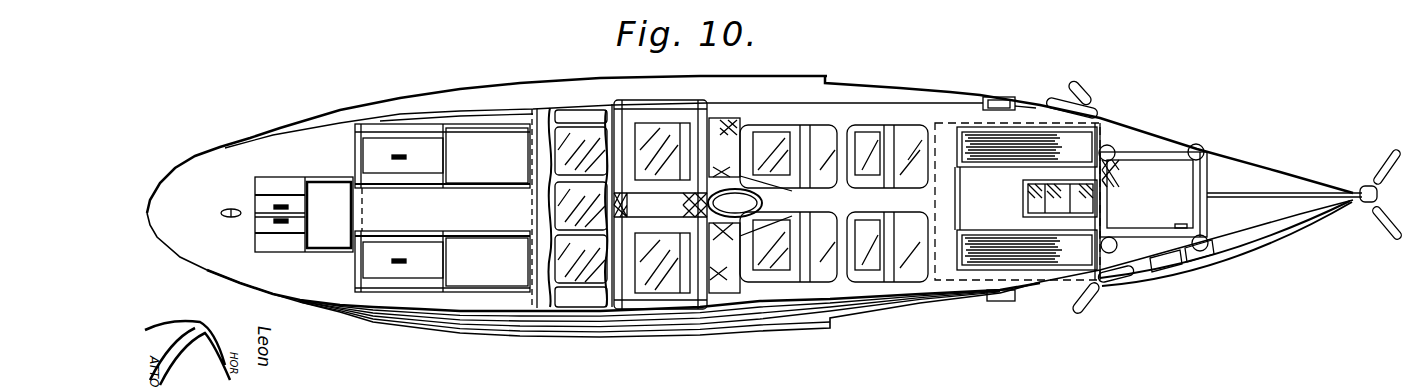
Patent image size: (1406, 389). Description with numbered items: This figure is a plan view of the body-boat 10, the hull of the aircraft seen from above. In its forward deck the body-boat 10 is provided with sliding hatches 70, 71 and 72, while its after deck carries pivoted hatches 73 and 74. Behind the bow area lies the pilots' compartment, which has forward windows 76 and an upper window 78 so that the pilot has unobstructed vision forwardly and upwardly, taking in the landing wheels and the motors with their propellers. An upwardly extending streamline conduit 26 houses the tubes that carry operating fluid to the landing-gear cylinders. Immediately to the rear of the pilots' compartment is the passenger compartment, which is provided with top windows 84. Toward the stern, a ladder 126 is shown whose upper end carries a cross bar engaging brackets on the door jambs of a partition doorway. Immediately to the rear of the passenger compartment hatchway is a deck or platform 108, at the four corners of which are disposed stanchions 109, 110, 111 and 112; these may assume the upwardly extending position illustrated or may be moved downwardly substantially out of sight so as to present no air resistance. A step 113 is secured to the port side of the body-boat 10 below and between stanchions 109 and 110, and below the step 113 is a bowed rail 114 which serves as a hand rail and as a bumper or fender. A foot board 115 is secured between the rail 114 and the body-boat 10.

The body-boat 10 is at (243, 152).
The sliding hatch 70 is at (277, 243).
The sliding hatch 71 is at (373, 157).
The sliding hatch 72 is at (383, 293).
The forward windows 76 is at (575, 272).
The upper window 78 is at (671, 294).
The streamline conduit 26 is at (763, 193).
The top windows 84 is at (808, 216).
The pivoted hatch 73 is at (1038, 132).
The pivoted hatch 74 is at (1058, 250).
The ladder 126 is at (1024, 183).
The deck or platform 108 is at (1153, 194).
The stanchion 109 is at (1122, 238).
The stanchion 110 is at (1204, 237).
The stanchion 111 is at (1108, 146).
The stanchion 112 is at (1198, 145).
The step 113 is at (1168, 265).
The bowed rail 114 is at (1245, 256).
The foot board 115 is at (1258, 281).